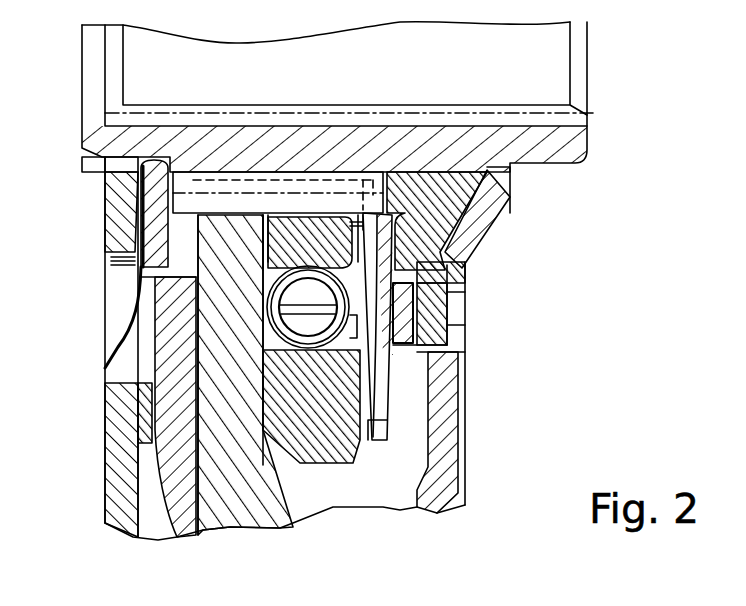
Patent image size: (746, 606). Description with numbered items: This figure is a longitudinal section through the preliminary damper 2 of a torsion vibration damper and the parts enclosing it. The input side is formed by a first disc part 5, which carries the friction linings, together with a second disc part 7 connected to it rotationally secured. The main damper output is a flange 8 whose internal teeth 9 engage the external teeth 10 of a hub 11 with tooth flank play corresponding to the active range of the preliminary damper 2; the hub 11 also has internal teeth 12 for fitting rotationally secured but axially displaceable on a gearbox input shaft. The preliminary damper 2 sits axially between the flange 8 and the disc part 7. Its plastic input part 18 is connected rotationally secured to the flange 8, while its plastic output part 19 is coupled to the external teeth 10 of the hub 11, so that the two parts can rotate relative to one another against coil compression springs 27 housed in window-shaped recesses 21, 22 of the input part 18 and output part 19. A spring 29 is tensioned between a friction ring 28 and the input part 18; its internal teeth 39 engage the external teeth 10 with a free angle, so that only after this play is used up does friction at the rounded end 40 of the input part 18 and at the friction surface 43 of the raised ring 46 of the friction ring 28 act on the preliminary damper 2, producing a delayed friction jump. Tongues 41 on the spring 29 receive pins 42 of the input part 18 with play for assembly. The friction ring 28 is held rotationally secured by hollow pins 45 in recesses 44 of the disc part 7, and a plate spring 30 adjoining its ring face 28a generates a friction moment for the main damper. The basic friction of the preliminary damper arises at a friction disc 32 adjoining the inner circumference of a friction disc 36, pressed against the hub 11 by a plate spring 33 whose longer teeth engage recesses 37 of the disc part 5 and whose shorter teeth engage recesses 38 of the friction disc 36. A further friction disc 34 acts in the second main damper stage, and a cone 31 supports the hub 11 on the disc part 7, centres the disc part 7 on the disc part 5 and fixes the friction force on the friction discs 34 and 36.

The preliminary damper 2 is at (482, 315).
The first disc part 5 is at (120, 235).
The second disc part 7 is at (440, 507).
The flange 8 is at (292, 235).
The internal teeth 9 is at (250, 180).
The external teeth 10 is at (350, 195).
The hub 11 is at (243, 235).
The internal teeth 12 is at (190, 112).
The input part 18 is at (330, 462).
The output part 19 is at (318, 230).
The window-shaped recesses 21 is at (150, 343).
The window-shaped recesses 22 is at (133, 282).
The coil compression springs 27 is at (304, 352).
The friction ring 28 is at (465, 265).
The ring face 28a is at (457, 347).
The spring 29 is at (382, 372).
The plate spring 30 is at (465, 345).
The cone 31 is at (500, 203).
The friction disc 32 is at (103, 183).
The plate spring 33 is at (117, 208).
The friction disc 34 is at (137, 412).
The friction disc 36 is at (137, 437).
The recesses 37 is at (123, 303).
The recesses 38 is at (143, 372).
The internal teeth 39 is at (378, 180).
The rounded end 40 is at (372, 440).
The tongues 41 is at (388, 400).
The pins 42 is at (418, 440).
The friction surface 43 is at (462, 243).
The recesses 44 is at (455, 295).
The hollow pins 45 is at (462, 280).
The raised ring 46 is at (457, 300).